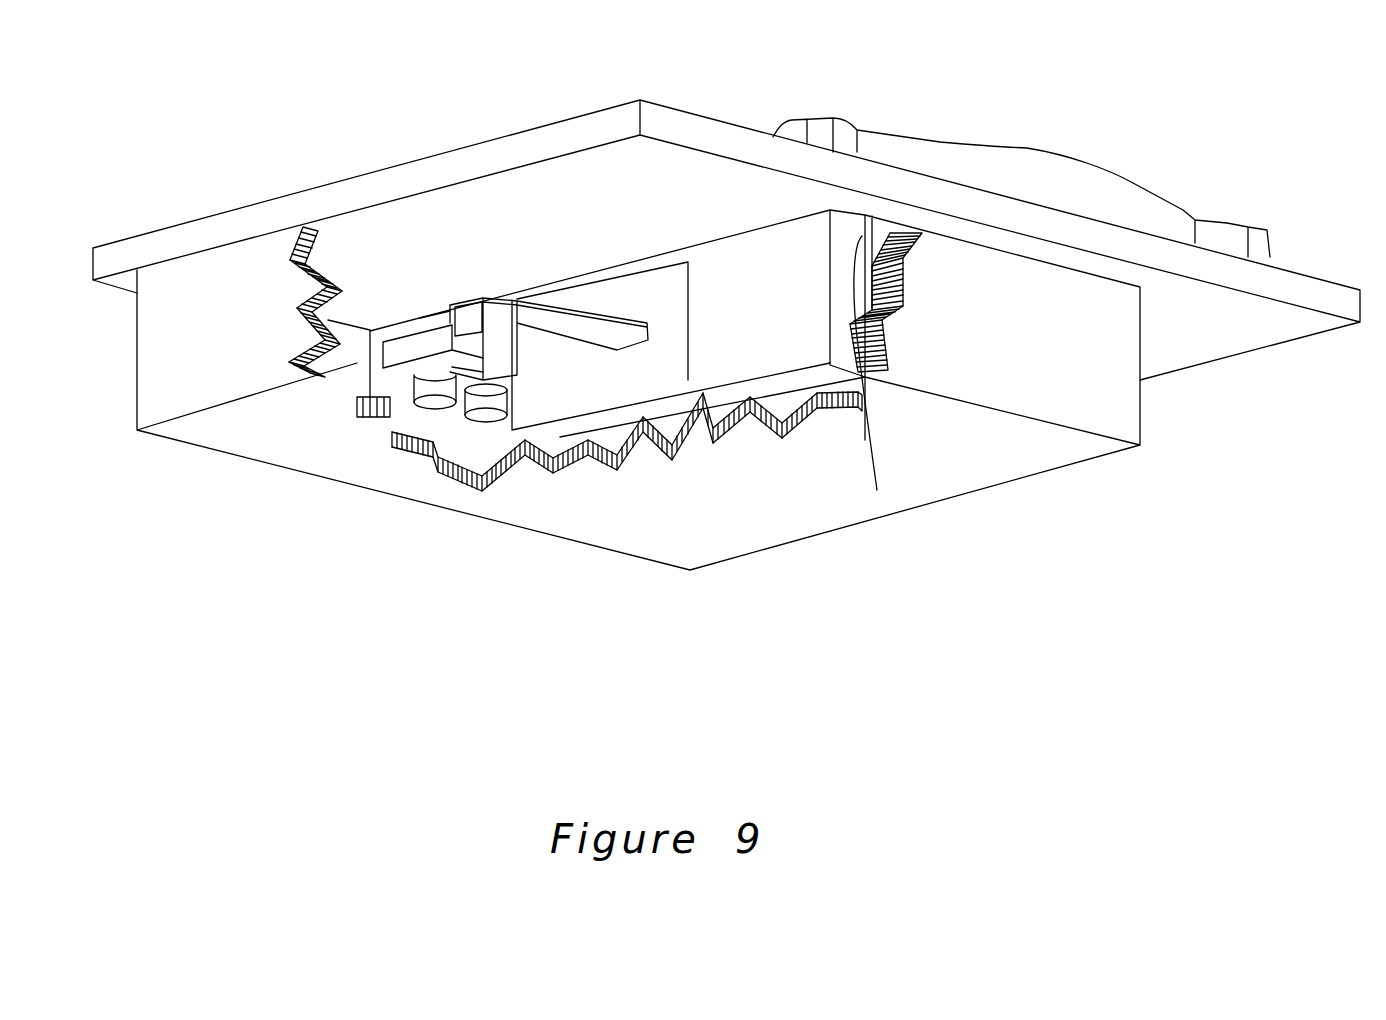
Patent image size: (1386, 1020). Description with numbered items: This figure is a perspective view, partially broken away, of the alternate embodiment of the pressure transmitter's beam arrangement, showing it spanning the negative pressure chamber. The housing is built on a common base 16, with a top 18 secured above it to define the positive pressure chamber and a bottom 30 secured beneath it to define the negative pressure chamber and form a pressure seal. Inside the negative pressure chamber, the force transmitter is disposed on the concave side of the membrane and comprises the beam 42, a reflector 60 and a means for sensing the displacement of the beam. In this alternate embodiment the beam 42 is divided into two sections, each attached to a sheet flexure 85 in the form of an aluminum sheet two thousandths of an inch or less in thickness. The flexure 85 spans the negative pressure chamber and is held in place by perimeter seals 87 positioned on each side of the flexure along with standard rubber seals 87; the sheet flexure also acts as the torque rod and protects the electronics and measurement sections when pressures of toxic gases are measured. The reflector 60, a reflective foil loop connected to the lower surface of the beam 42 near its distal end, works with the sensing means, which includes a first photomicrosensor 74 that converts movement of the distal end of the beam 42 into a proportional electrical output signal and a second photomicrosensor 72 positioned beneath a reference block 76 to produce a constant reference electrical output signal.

The base 16 is at (487, 158).
The top 18 is at (1037, 177).
The bottom 30 is at (1090, 337).
The beam 42 is at (567, 332).
The reflector 60 is at (507, 347).
The second photomicrosensor 72 is at (488, 408).
The first photomicrosensor 74 is at (427, 385).
The reference block 76 is at (410, 347).
The sheet flexure 85 is at (657, 372).
The perimeter seals 87 is at (813, 233).